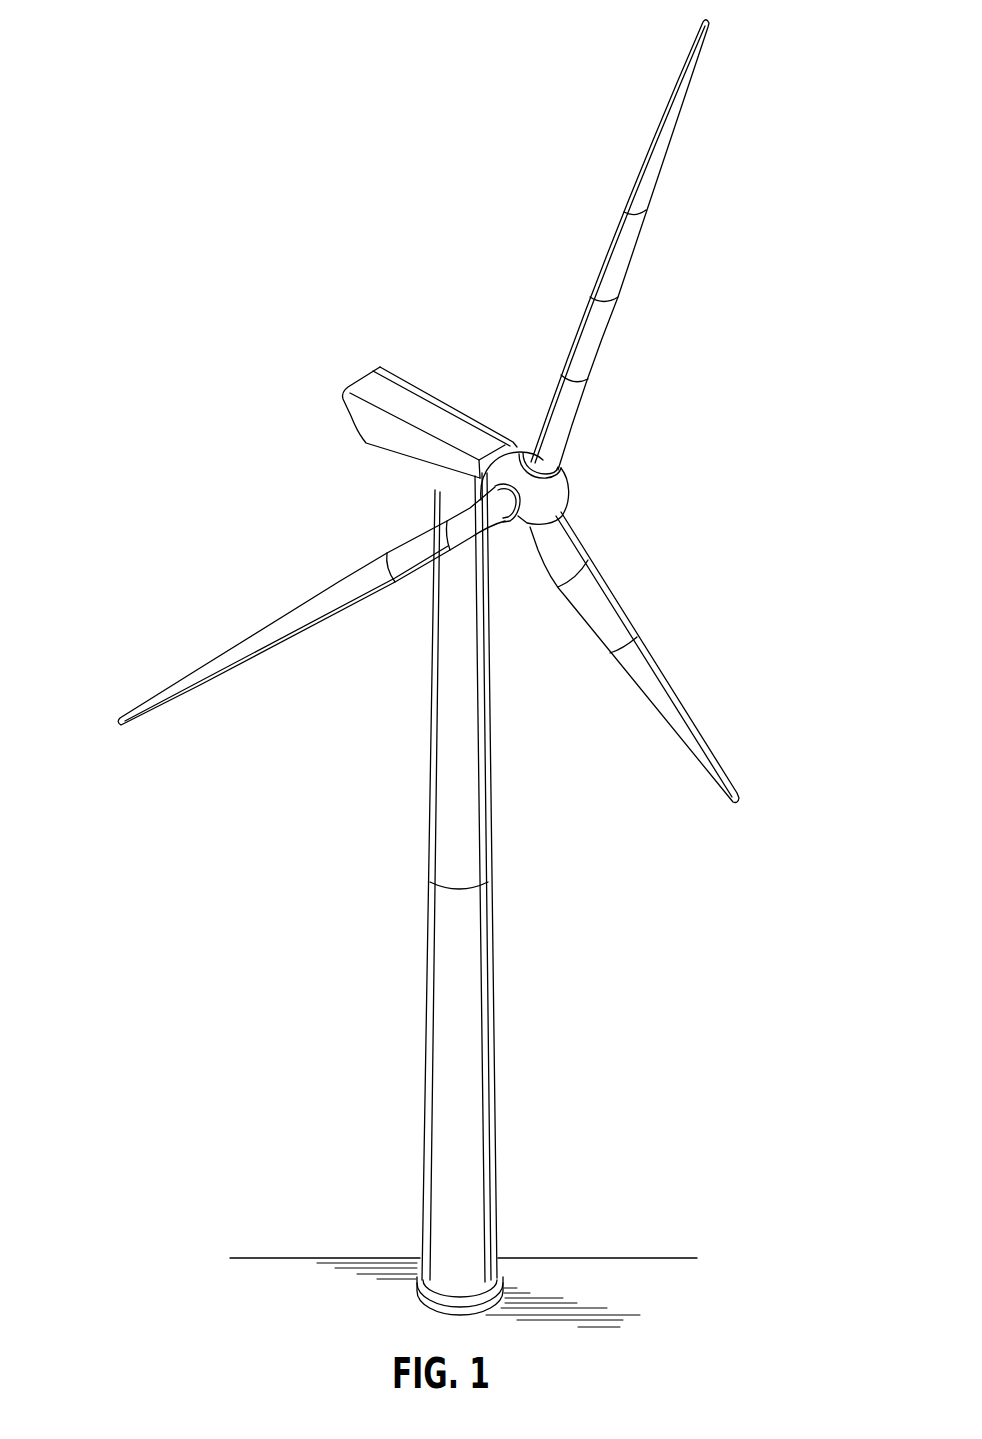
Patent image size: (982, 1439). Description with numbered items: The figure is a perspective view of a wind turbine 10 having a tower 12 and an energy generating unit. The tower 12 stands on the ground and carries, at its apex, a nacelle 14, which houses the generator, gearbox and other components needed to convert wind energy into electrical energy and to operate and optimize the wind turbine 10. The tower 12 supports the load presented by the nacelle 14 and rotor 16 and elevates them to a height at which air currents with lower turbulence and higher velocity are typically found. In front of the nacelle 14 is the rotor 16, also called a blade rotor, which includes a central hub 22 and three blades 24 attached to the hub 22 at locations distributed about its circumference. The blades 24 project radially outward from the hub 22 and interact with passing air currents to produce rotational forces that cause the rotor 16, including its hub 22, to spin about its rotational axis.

The wind turbine 10 is at (437, 673).
The tower 12 is at (430, 938).
The nacelle 14 is at (428, 396).
The rotor 16 is at (428, 411).
The central hub 22 is at (551, 489).
The blades 24 is at (607, 253).